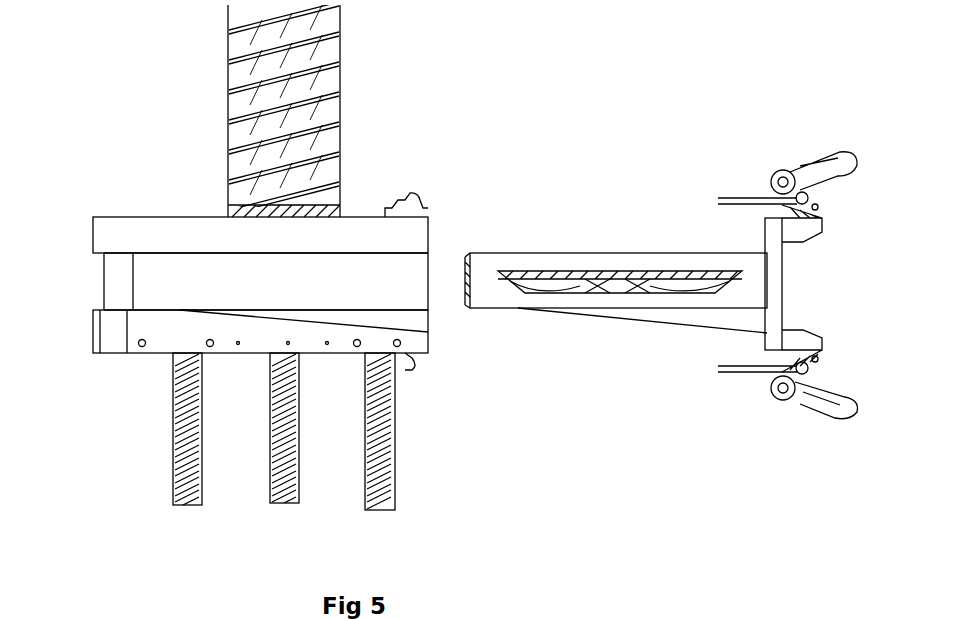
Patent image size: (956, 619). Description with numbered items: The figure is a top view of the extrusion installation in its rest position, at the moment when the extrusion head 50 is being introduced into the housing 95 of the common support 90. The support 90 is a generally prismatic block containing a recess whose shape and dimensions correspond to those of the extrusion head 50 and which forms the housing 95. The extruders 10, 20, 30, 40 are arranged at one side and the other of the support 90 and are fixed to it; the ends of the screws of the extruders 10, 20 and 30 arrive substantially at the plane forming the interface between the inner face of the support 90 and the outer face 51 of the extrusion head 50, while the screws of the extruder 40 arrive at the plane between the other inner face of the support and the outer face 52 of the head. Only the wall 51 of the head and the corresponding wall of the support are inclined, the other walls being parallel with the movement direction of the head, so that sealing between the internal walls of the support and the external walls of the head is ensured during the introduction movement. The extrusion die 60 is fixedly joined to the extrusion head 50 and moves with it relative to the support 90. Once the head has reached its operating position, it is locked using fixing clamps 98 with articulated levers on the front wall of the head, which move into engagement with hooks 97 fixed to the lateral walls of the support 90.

The extruder 10 is at (390, 515).
The extruder 20 is at (285, 505).
The extruder 30 is at (190, 510).
The extruder 40 is at (345, 95).
The extrusion head 50 is at (643, 283).
The outer face of the extrusion head 51 is at (673, 327).
The outer face of the extrusion head 52 is at (567, 255).
The extrusion die 60 is at (705, 275).
The common support 90 is at (112, 200).
The housing 95 is at (325, 272).
The hook 97 is at (420, 208).
The fixing clamp 98 is at (795, 165).